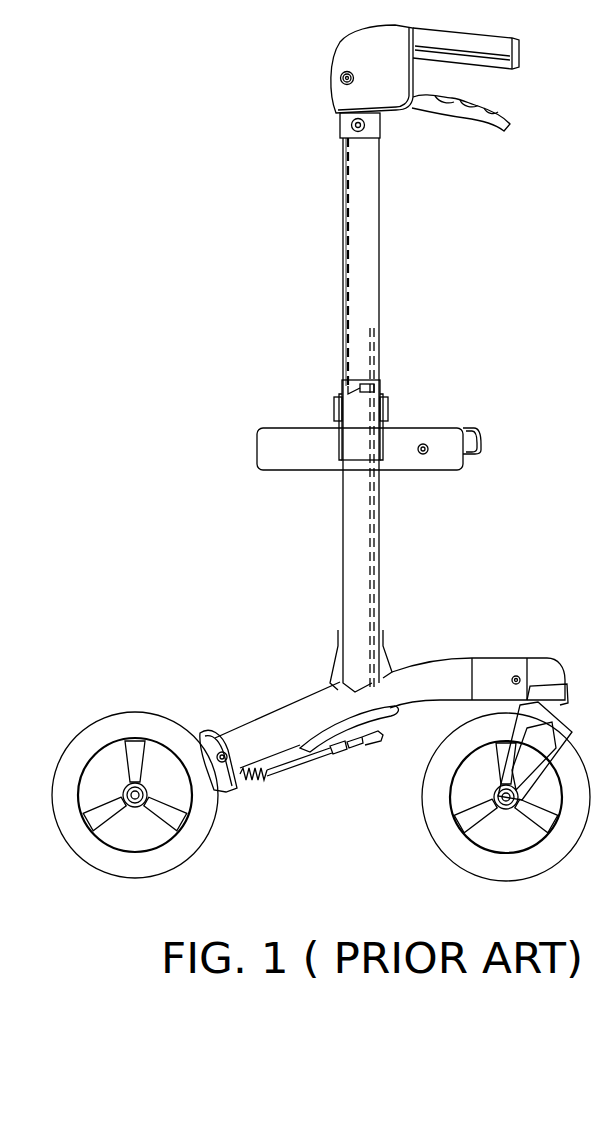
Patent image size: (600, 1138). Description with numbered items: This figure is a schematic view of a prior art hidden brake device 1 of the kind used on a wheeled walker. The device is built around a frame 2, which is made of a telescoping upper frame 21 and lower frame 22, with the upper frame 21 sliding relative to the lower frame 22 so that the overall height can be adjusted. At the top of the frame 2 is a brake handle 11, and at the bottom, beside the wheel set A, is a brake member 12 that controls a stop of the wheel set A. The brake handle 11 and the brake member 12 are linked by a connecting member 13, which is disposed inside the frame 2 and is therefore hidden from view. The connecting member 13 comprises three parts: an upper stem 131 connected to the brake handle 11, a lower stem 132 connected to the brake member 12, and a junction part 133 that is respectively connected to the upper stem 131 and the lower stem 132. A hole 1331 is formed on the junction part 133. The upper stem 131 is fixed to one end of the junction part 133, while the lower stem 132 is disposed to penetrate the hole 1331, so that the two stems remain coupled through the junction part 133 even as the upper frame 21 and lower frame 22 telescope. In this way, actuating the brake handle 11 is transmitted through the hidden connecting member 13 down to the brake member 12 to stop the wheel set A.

The hidden brake device 1 is at (240, 425).
The frame 2 is at (378, 246).
The brake handle 11 is at (505, 128).
The brake member 12 is at (213, 735).
The connecting member 13 is at (346, 284).
The upper stem 131 is at (348, 222).
The lower stem 132 is at (372, 353).
The junction part 133 is at (357, 391).
The hole 1331 is at (374, 385).
The upper frame 21 is at (364, 206).
The lower frame 22 is at (352, 538).
The wheel set A is at (102, 738).